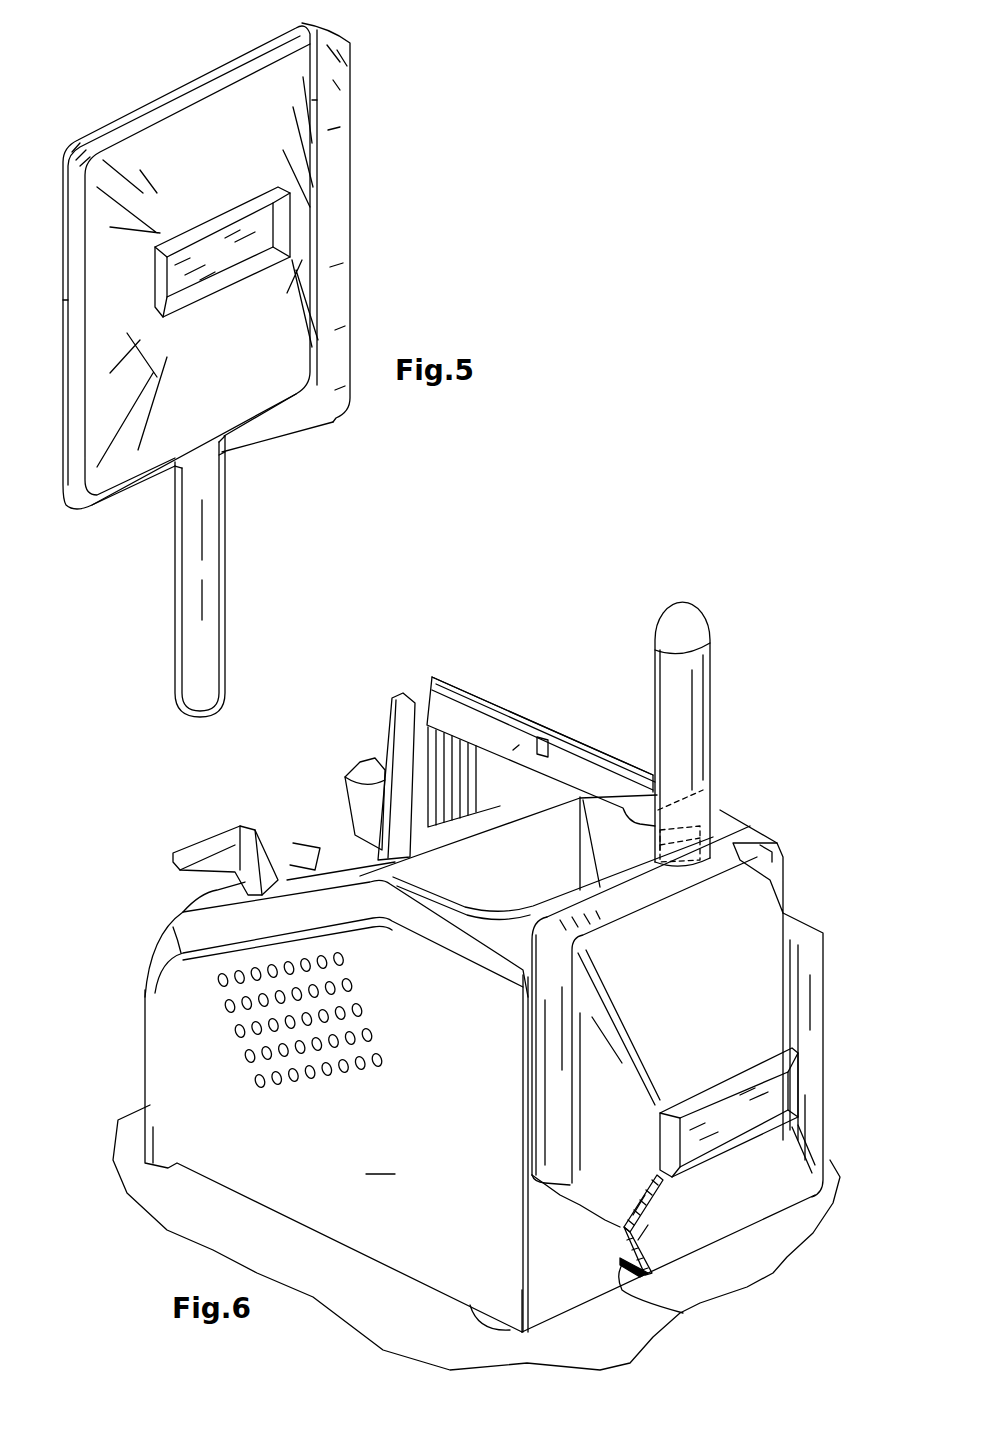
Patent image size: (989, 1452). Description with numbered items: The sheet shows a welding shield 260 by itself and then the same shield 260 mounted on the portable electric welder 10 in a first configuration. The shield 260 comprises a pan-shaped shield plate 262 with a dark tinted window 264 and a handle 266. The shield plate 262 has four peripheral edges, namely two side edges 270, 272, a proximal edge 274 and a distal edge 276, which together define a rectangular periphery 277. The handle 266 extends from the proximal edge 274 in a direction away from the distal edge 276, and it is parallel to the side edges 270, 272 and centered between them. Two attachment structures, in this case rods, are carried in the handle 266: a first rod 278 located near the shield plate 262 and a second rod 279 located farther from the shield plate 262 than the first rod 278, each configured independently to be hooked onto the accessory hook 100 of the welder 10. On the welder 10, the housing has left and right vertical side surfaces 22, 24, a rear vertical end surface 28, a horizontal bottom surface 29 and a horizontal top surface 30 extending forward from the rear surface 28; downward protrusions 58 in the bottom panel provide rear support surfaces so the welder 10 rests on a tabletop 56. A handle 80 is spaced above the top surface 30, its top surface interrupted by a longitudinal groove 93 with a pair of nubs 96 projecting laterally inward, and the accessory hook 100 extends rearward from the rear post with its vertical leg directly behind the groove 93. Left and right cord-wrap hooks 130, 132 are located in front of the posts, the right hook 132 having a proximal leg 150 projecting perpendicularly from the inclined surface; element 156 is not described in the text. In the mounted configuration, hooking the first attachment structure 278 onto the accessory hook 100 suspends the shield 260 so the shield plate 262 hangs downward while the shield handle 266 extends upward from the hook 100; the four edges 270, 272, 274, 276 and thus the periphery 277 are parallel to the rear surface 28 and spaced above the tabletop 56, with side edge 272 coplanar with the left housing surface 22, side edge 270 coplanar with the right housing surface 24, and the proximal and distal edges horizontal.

In FIG. 6, the welder 10 is at (594, 650).
In FIG. 6, the left vertical side surface 22 is at (783, 885).
In FIG. 6, the right vertical side surface 24 is at (306, 1062).
In FIG. 6, the rear vertical end surface 28 is at (554, 1247).
In FIG. 6, the horizontal bottom surface 29 is at (553, 1320).
In FIG. 6, the horizontal top surface 30 is at (500, 925).
In FIG. 6, the tabletop 56 is at (737, 1272).
In FIG. 6, the downward protrusions 58 is at (478, 1322).
In FIG. 6, the handle 80 is at (514, 707).
In FIG. 6, the groove 93 is at (469, 704).
In FIG. 6, the nubs 96 is at (543, 737).
In FIG. 6, the accessory hook 100 is at (697, 847).
In FIG. 6, the left cord-wrap hook 130 is at (357, 763).
In FIG. 6, the right cord-wrap hook 132 is at (172, 862).
In FIG. 6, the proximal leg 150 is at (267, 857).
In FIG. 6, the lever arm 156 is at (203, 843).
In FIG. 5, the shield 260 is at (439, 154).
In FIG. 6, the shield 260 is at (677, 1042).
In FIG. 5, the shield plate 262 is at (280, 145).
In FIG. 6, the shield plate 262 is at (810, 1137).
In FIG. 5, the dark tinted window 264 is at (227, 247).
In FIG. 6, the dark tinted window 264 is at (777, 1096).
In FIG. 5, the handle 266 is at (225, 610).
In FIG. 6, the handle 266 is at (700, 677).
In FIG. 5, the side edge 270 is at (63, 317).
In FIG. 6, the side edge 270 is at (530, 1115).
In FIG. 5, the side edge 272 is at (313, 297).
In FIG. 6, the side edge 272 is at (787, 913).
In FIG. 5, the proximal edge 274 is at (277, 412).
In FIG. 6, the proximal edge 274 is at (577, 902).
In FIG. 5, the distal edge 276 is at (197, 72).
In FIG. 6, the distal edge 276 is at (650, 1292).
In FIG. 5, the rectangular periphery 277 is at (312, 90).
In FIG. 6, the rectangular periphery 277 is at (533, 1147).
In FIG. 5, the first attachment structure 278 is at (225, 473).
In FIG. 6, the first attachment structure 278 is at (700, 820).
In FIG. 5, the second attachment structure 279 is at (202, 497).